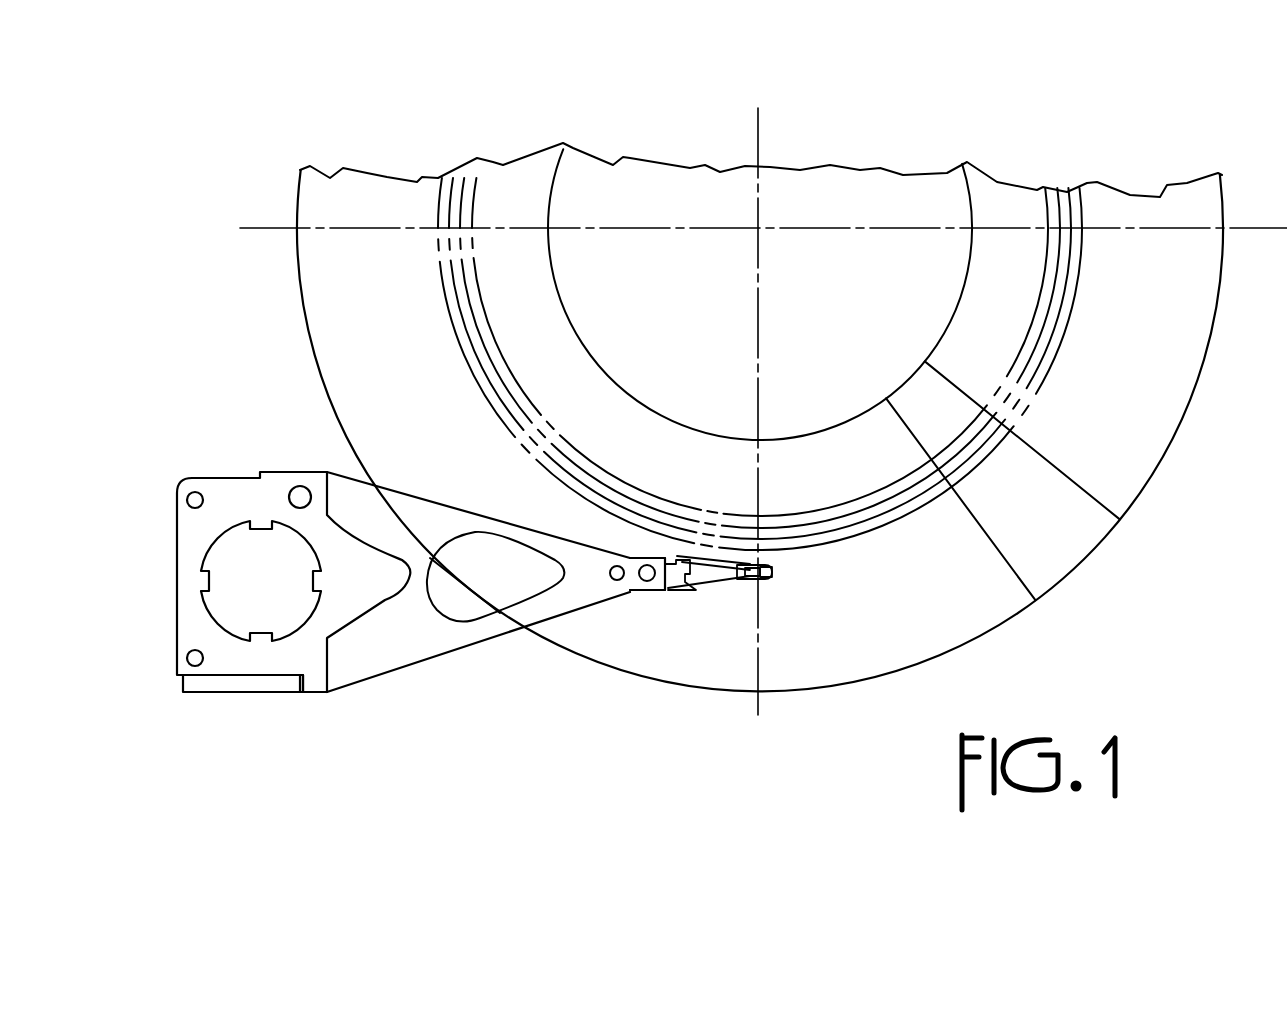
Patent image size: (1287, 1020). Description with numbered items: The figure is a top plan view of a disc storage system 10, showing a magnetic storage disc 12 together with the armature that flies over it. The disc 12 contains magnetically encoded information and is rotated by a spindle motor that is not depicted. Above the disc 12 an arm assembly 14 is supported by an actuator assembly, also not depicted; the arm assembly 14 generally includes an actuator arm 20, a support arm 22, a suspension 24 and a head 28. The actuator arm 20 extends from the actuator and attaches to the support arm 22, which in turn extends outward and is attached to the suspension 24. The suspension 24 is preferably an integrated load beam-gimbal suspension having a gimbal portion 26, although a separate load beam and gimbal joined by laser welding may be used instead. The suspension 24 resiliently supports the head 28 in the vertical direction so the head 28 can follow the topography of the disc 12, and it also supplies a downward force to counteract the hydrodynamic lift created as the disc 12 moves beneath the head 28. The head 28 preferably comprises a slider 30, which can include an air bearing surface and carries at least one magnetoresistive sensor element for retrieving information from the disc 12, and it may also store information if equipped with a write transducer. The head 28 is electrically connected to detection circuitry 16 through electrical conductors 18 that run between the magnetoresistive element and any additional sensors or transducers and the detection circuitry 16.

The disc storage system 10 is at (295, 157).
The magnetic storage disc 12 is at (298, 310).
The arm assembly 14 is at (388, 671).
The detection circuitry 16 is at (250, 695).
The electrical conductors 18 is at (507, 636).
The actuator arm 20 is at (443, 652).
The support arm 22 is at (630, 593).
The suspension 24 is at (673, 588).
The gimbal portion 26 is at (748, 582).
The head 28 is at (764, 580).
The slider 30 is at (774, 573).